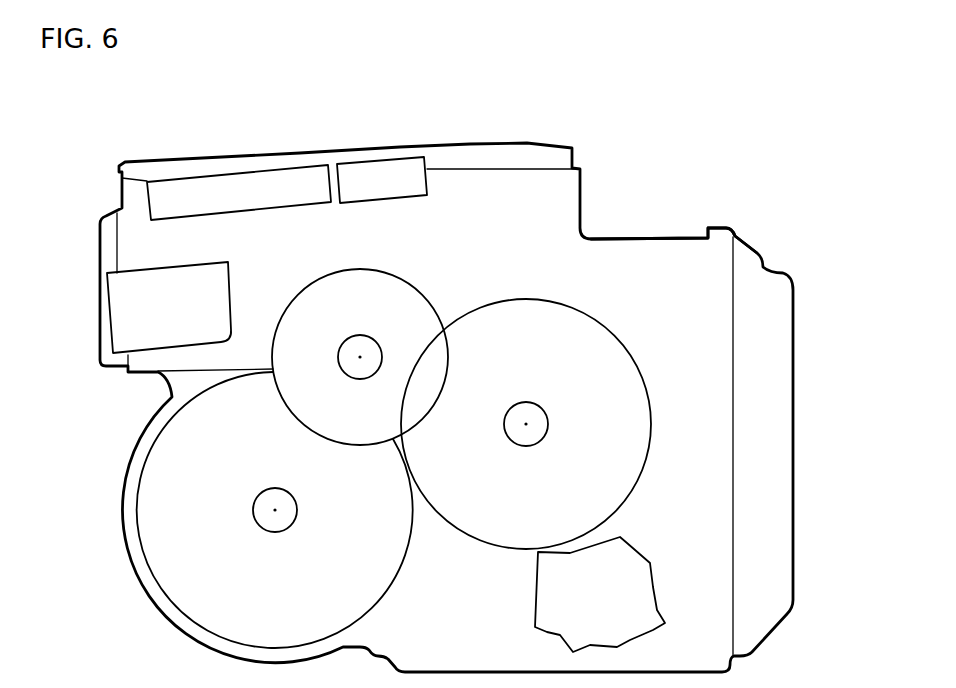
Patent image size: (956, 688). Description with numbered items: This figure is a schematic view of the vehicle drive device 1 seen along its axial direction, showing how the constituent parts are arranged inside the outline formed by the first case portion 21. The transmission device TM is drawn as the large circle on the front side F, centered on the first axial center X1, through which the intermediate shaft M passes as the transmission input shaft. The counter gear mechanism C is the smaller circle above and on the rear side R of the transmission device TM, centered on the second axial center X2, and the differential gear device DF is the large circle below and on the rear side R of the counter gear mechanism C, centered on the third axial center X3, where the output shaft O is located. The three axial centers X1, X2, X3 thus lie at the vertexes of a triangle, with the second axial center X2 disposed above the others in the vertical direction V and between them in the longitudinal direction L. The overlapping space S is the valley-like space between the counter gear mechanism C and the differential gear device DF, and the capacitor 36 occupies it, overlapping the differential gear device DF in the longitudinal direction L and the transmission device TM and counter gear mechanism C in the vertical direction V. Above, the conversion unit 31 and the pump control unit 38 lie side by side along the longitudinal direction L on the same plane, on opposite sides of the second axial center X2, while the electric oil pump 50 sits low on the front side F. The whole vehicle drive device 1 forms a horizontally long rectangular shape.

The vehicle drive device 1 is at (727, 140).
The first case portion 21 is at (633, 238).
The conversion unit 31 is at (188, 182).
The capacitor 36 is at (212, 273).
The pump control unit 38 is at (365, 169).
The electric oil pump 50 is at (657, 582).
The counter gear mechanism C is at (347, 270).
The differential gear device DF is at (382, 575).
The transmission device TM is at (640, 372).
The first axial center X1 is at (527, 423).
The second axial center X2 is at (361, 359).
The third axial center X3 is at (274, 509).
The intermediate shaft M is at (527, 446).
The output shaft O is at (275, 532).
The longitudinal direction L is at (473, 119).
The vertical direction V is at (812, 283).
The front side F is at (840, 448).
The rear side R is at (68, 447).
The overlapping space S is at (263, 351).